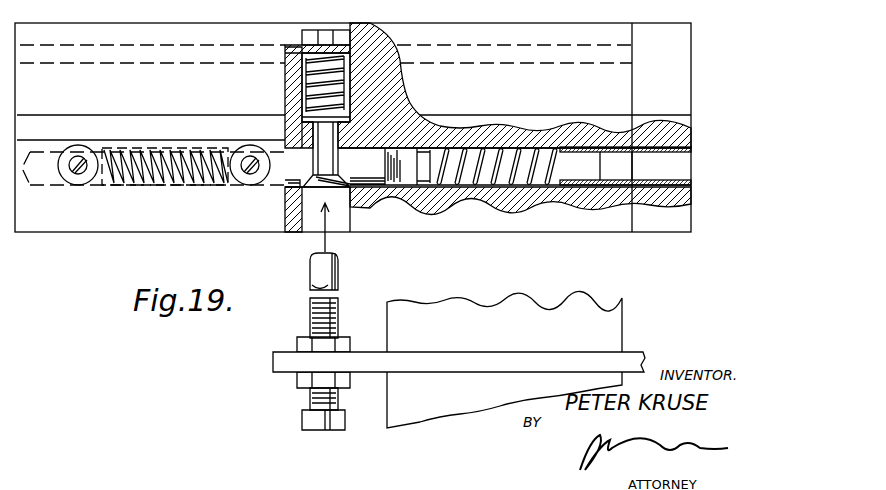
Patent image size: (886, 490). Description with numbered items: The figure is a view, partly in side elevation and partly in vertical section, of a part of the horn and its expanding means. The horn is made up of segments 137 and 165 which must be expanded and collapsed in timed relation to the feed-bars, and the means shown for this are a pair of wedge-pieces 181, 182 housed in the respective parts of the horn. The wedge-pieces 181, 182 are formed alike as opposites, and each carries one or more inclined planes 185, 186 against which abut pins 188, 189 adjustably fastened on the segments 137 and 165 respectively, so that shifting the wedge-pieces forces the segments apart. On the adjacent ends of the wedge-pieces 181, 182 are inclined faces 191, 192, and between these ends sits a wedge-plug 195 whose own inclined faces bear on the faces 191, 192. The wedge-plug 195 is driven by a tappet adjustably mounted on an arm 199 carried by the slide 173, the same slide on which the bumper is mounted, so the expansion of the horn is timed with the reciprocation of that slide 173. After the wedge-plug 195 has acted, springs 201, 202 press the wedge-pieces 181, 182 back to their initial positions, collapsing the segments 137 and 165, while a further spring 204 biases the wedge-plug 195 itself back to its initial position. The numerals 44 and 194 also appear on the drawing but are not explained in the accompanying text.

The carriage frame 44 is at (55, 242).
The horn segment 137 is at (181, 233).
The horn segment 165 is at (560, 230).
The slide 173 is at (630, 306).
The wedge-piece 181 is at (282, 186).
The wedge-piece 182 is at (372, 182).
The inclined plane 185 is at (398, 160).
The inclined plane 186 is at (613, 150).
The pin 188 is at (77, 160).
The pin 189 is at (250, 160).
The inclined face 191 is at (303, 170).
The inclined face 192 is at (344, 180).
The threaded bolt 194 is at (335, 290).
The wedge-plug 195 is at (332, 238).
The arm 199 is at (460, 354).
The spring 201 is at (160, 178).
The spring 202 is at (492, 196).
The spring 204 is at (300, 95).